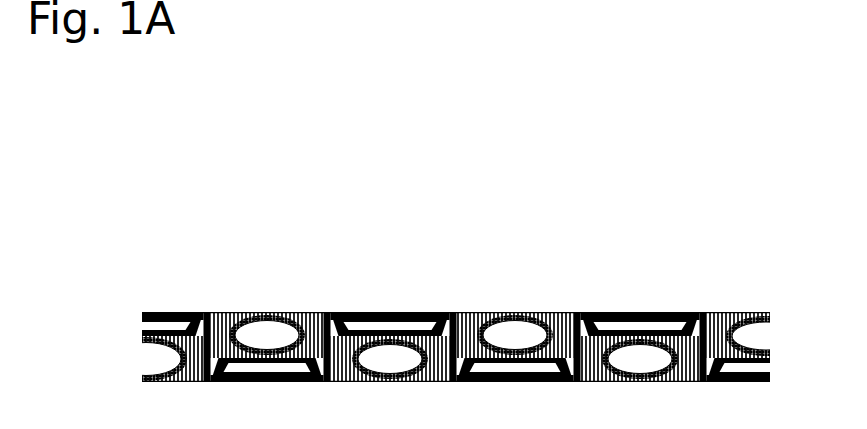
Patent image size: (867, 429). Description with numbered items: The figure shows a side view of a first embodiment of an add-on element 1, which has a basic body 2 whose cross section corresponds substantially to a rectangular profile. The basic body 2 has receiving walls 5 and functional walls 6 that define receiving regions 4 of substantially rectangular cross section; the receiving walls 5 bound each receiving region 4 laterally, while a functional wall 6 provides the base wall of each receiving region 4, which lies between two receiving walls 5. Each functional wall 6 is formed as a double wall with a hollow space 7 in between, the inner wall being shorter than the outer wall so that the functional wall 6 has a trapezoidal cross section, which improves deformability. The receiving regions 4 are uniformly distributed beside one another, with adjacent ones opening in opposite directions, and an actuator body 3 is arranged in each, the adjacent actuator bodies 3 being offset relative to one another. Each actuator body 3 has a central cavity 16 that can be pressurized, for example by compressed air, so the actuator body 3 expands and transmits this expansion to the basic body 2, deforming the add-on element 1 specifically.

The add-on element 1 is at (390, 165).
The basic body 2 is at (449, 306).
The actuator body 3 is at (302, 315).
The receiving region 4 is at (505, 305).
The receiving wall 5 is at (577, 315).
The functional wall 6 is at (616, 305).
The hollow space 7 is at (665, 315).
The central cavity 16 is at (254, 332).